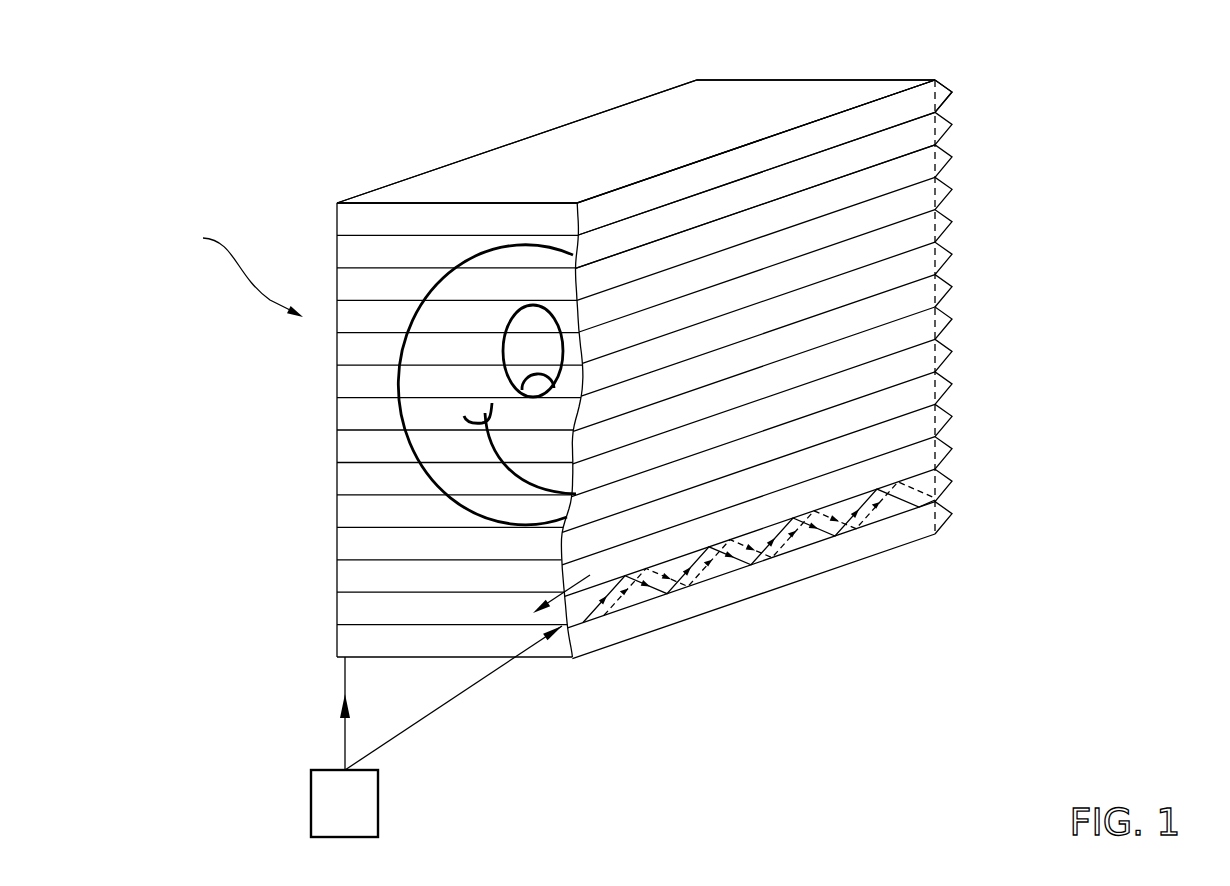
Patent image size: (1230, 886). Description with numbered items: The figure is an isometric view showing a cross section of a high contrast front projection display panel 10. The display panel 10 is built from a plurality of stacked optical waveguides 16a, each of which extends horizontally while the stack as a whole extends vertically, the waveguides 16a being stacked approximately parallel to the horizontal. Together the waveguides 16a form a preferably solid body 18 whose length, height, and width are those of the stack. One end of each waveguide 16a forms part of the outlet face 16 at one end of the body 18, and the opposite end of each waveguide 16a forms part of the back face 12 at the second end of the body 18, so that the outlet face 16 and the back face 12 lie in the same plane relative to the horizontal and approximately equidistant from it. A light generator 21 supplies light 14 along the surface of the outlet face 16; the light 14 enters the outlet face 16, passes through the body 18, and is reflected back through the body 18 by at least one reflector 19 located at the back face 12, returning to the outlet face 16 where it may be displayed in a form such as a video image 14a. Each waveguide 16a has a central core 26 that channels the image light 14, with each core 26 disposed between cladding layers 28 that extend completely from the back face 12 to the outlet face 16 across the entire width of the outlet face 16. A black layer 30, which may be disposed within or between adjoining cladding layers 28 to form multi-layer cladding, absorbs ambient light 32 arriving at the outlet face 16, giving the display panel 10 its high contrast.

The display panel 10 is at (1079, 76).
The back face 12 is at (947, 160).
The light 14 is at (372, 716).
The video image 14a is at (482, 288).
The outlet face 16 is at (359, 266).
The stacked optical waveguides 16a is at (337, 408).
The body 18 is at (635, 146).
The reflector 19 is at (950, 242).
The light generator 21 is at (331, 818).
The central core 26 is at (833, 167).
The cladding layers 28 is at (907, 120).
The black layer 30 is at (755, 173).
The ambient light 32 is at (239, 273).